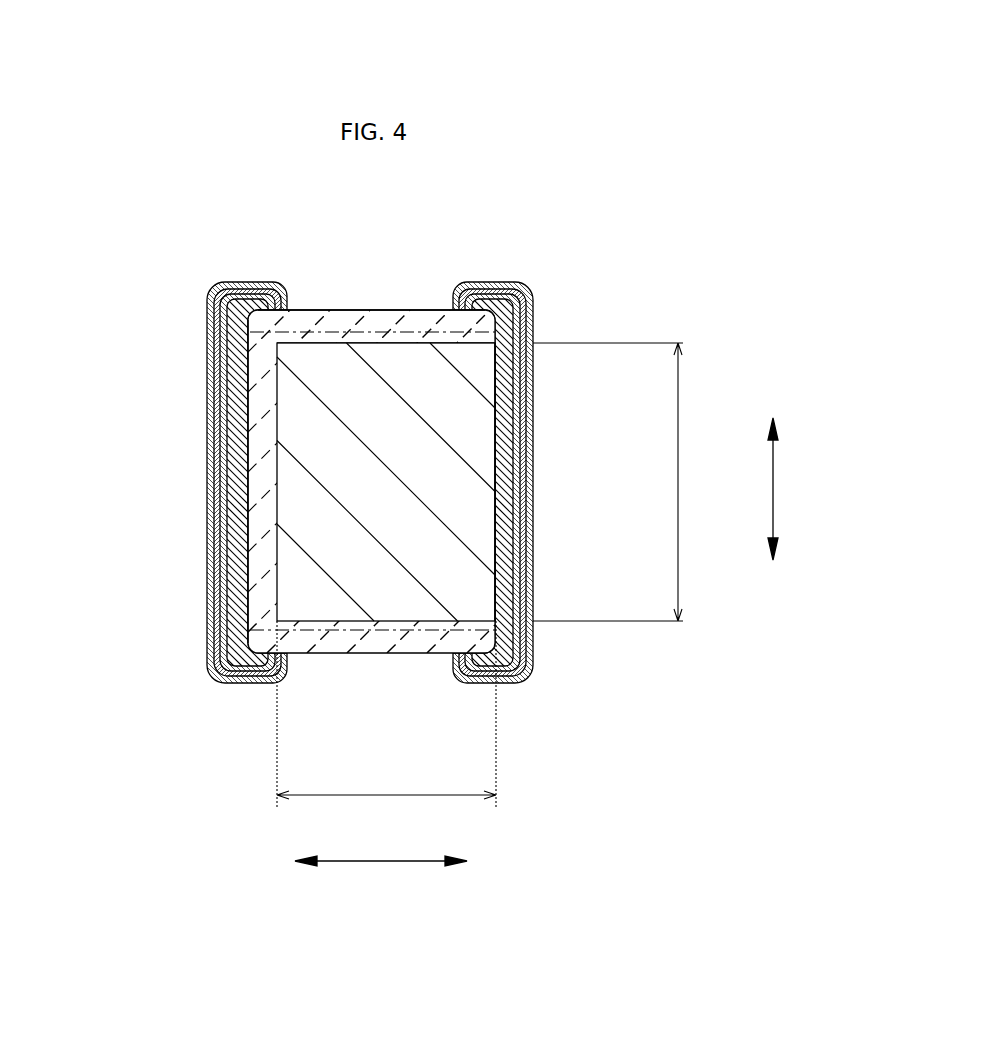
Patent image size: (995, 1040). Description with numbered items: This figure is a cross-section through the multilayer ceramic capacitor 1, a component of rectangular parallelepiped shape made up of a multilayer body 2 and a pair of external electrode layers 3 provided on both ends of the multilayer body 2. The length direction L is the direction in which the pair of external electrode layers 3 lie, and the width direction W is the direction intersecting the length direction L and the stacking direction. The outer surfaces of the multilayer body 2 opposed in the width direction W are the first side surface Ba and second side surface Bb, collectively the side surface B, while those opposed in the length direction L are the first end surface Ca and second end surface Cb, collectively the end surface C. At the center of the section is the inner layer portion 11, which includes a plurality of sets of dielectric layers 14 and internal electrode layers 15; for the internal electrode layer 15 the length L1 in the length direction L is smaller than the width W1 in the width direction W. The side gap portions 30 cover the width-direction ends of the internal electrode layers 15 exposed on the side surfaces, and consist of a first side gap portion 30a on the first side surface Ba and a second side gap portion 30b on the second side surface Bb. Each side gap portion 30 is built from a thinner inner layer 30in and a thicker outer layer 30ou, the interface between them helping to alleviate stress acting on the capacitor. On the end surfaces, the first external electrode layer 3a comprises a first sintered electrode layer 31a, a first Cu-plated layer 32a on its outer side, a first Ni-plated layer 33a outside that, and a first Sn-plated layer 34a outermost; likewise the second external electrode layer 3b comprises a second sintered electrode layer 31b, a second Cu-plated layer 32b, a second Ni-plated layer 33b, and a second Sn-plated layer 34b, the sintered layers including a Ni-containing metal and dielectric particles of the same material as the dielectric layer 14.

The multilayer ceramic capacitor 1 is at (610, 88).
The multilayer body 2 is at (316, 480).
The external electrode layers 3 is at (371, 445).
The first external electrode layer 3a is at (100, 230).
The second external electrode layer 3b is at (643, 207).
The first sintered electrode layer 31a is at (240, 303).
The first Cu-plated layer 32a is at (223, 308).
The first Ni-plated layer 33a is at (216, 337).
The first Sn-plated layer 34a is at (209, 363).
The second sintered electrode layer 31b is at (493, 307).
The second Cu-plated layer 32b is at (516, 300).
The second Ni-plated layer 33b is at (523, 313).
The second Sn-plated layer 34b is at (531, 333).
The inner layer portion 11 is at (301, 564).
The dielectric layers 14 is at (257, 587).
The internal electrode layers 15 is at (307, 583).
The side gap portions 30 is at (386, 469).
The first side gap portion 30a is at (362, 328).
The second side gap portion 30b is at (427, 645).
The inner layer 30in is at (390, 340).
The outer layer 30ou is at (437, 312).
The side surface B is at (371, 465).
The first side surface Ba is at (330, 325).
The second side surface Bb is at (345, 650).
The end surface C is at (367, 481).
The first end surface Ca is at (247, 473).
The second end surface Cb is at (505, 494).
The width of internal electrode layer W1 is at (628, 482).
The width direction W is at (786, 489).
The length of internal electrode layer L1 is at (386, 724).
The length direction L is at (381, 875).